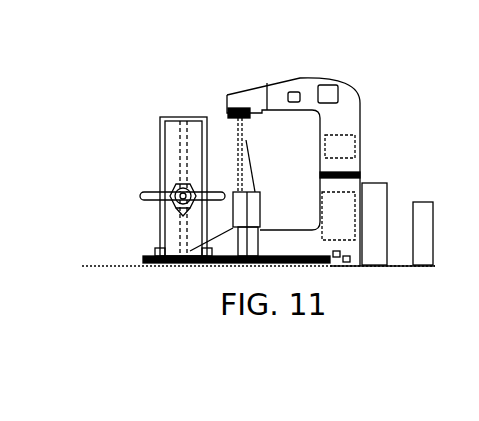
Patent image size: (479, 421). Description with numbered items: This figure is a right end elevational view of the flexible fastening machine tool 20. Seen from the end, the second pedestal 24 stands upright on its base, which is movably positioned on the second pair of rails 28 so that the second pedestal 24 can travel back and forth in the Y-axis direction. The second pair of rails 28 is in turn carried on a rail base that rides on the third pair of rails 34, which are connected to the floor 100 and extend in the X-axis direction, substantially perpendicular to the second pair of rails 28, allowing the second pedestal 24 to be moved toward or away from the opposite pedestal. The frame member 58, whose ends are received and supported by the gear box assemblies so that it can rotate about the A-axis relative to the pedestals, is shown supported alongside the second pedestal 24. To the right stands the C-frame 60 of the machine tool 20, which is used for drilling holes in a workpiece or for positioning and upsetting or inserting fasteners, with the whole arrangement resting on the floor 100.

The flexible fastening machine tool 20 is at (398, 47).
The second pedestal 24 is at (163, 117).
The second pair of rails 28 is at (145, 256).
The third pair of rails 34 is at (180, 264).
The frame member 58 is at (142, 194).
The C-frame 60 is at (352, 105).
The floor 100 is at (98, 264).